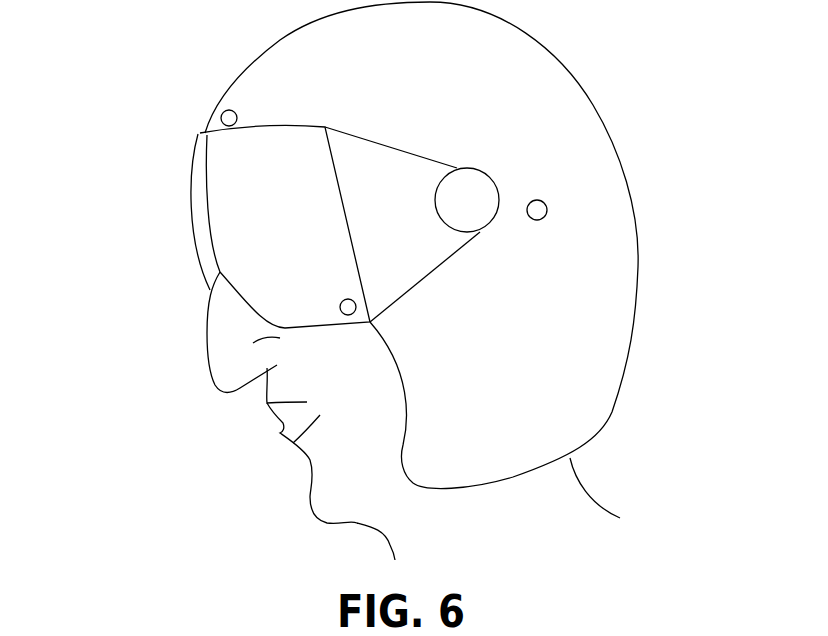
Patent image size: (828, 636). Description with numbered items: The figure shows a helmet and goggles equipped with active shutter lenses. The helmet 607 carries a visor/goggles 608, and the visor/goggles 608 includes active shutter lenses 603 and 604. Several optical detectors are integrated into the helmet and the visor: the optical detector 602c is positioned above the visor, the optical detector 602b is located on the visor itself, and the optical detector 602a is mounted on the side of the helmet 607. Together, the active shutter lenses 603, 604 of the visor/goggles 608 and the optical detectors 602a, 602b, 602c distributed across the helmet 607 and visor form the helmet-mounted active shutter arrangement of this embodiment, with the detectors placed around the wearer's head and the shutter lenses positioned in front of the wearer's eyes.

The helmet 607 is at (593, 105).
The active shutter lens 604 is at (298, 228).
The active shutter lens 603 is at (205, 225).
The visor/goggles 608 is at (433, 277).
The optical detector 602a is at (538, 221).
The optical detector 602b is at (343, 316).
The optical detector 602c is at (221, 100).